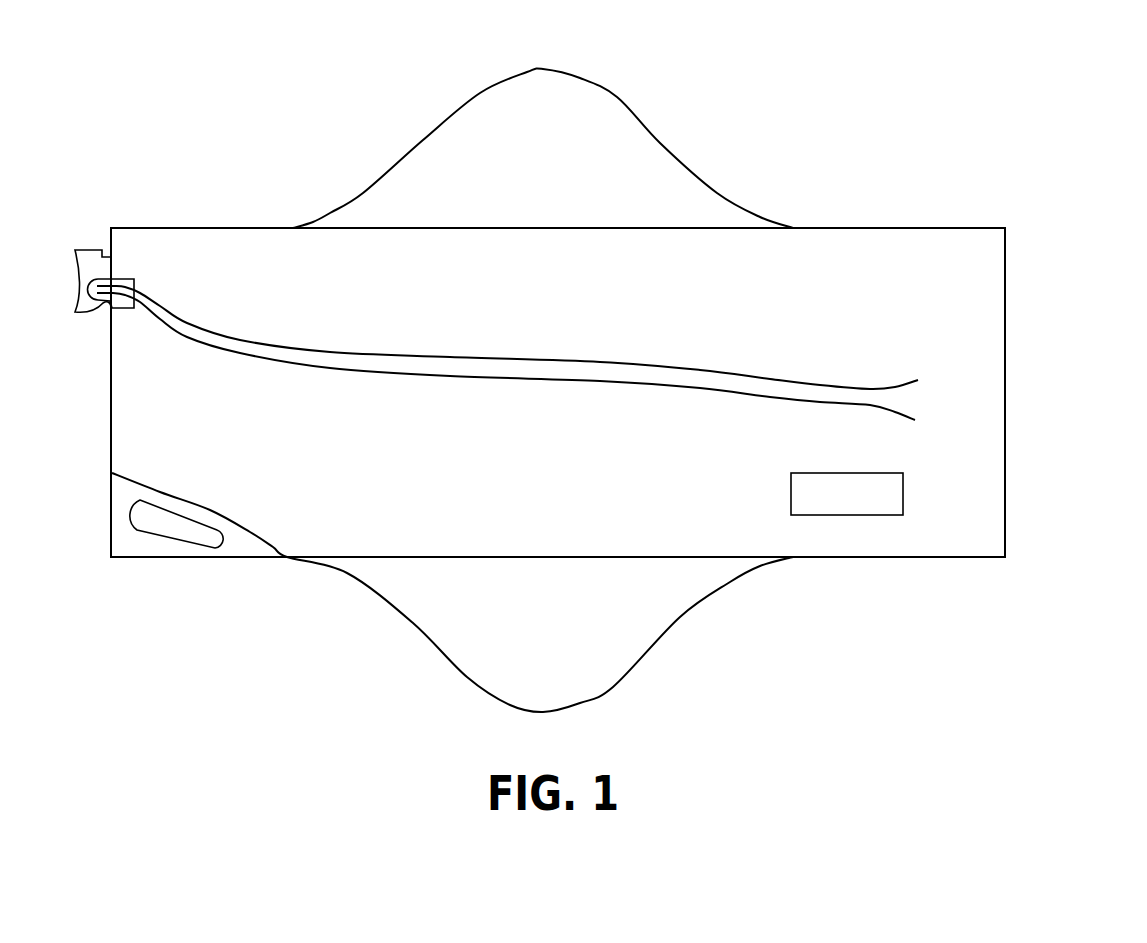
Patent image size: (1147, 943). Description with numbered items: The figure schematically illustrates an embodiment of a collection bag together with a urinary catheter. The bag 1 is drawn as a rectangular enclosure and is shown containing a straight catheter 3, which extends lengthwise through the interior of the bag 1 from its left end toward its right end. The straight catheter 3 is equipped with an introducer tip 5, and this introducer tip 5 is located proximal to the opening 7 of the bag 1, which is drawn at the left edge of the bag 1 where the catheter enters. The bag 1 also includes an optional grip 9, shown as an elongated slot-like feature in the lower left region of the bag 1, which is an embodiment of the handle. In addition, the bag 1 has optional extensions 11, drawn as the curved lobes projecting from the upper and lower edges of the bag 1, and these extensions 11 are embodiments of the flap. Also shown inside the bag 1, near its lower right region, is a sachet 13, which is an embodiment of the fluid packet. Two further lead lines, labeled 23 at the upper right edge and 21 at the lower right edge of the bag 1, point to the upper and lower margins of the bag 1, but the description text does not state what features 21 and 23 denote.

The bag 1 is at (918, 227).
The straight catheter 3 is at (872, 388).
The introducer tip 5 is at (122, 277).
The opening 7 is at (93, 248).
The grip 9 is at (128, 512).
The extensions 11 is at (613, 95).
The sachet 13 is at (858, 502).
The lower edge 21 is at (1029, 507).
The upper edge 23 is at (1030, 253).